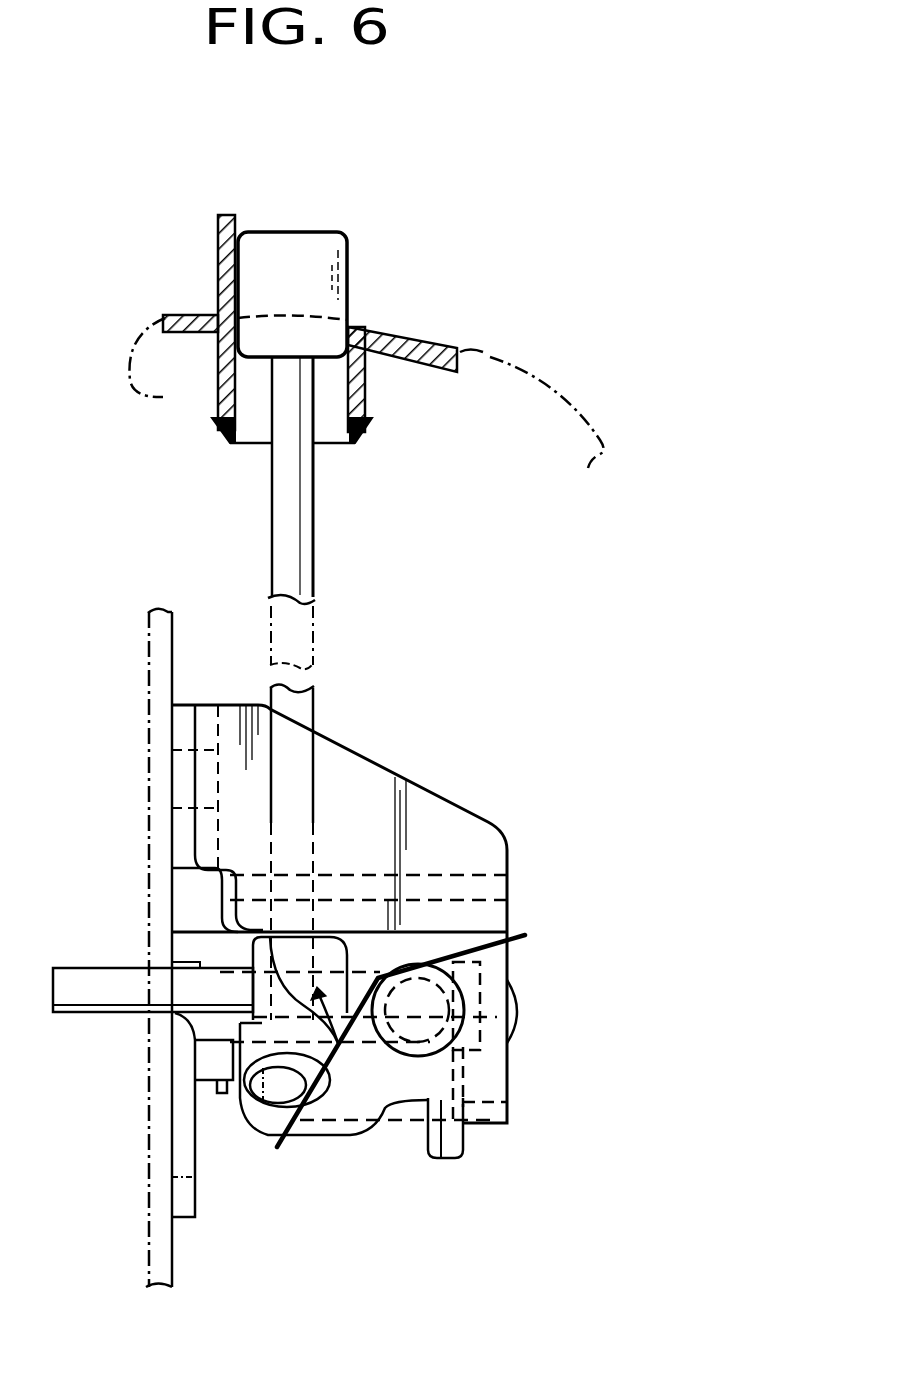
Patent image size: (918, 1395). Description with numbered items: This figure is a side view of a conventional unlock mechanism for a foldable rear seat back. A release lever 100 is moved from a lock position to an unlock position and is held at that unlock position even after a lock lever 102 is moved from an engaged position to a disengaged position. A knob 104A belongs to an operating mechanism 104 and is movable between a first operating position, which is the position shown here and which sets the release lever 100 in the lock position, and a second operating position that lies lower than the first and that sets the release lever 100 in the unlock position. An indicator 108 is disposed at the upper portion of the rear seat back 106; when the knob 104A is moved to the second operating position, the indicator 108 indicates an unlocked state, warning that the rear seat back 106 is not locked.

The release lever 100 is at (360, 1140).
The lock lever 102 is at (343, 1043).
The operating mechanism 104 is at (322, 542).
The knob 104A is at (320, 230).
The rear seat back 106 is at (495, 358).
The indicator 108 is at (256, 262).